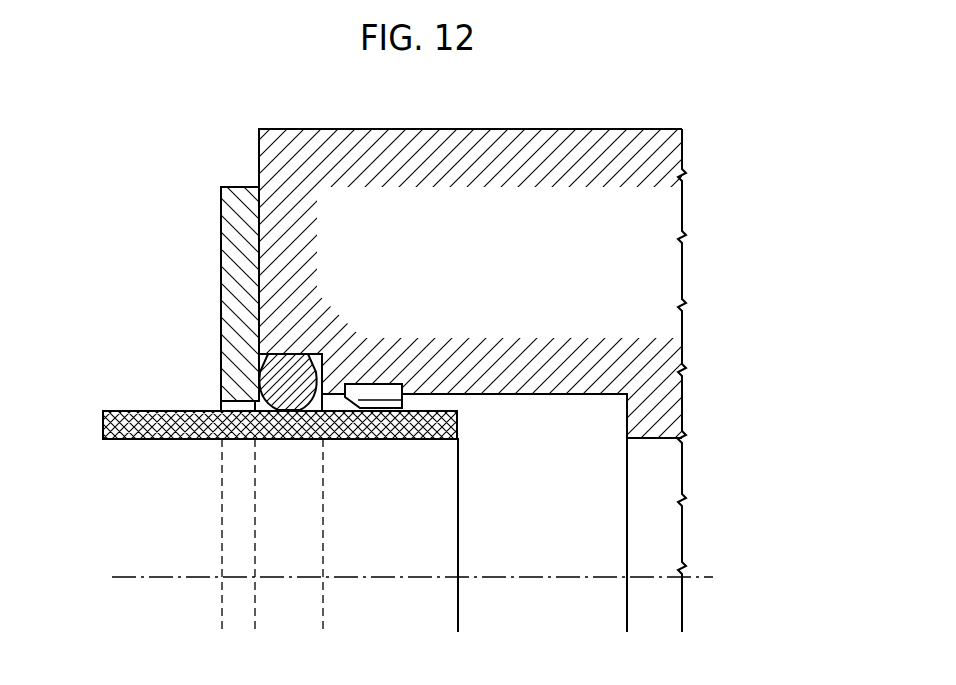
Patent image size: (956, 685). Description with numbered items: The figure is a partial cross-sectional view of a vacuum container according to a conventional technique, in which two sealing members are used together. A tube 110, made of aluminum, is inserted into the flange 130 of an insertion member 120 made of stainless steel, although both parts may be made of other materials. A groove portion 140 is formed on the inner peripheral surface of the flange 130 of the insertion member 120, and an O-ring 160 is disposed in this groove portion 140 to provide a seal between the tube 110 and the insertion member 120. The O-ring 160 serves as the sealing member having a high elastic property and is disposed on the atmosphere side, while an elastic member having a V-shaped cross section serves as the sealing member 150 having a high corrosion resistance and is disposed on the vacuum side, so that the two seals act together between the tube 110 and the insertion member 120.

The tube 110 is at (130, 411).
The insertion member 120 is at (697, 378).
The flange 130 is at (675, 148).
The groove portion 140 is at (348, 340).
The sealing member 150 is at (402, 399).
The O-ring 160 is at (288, 370).